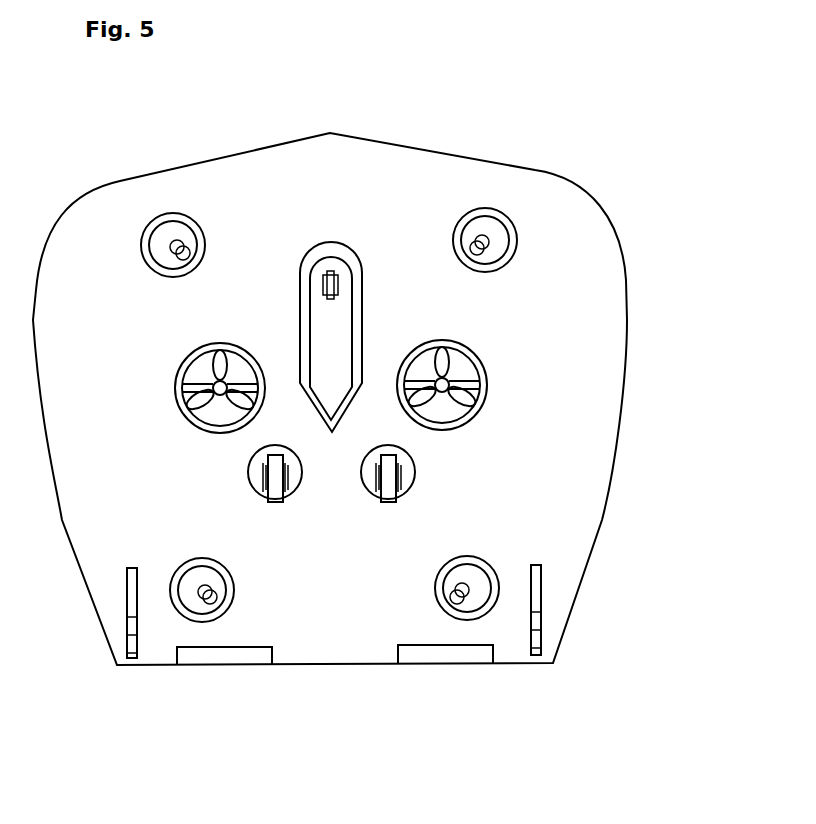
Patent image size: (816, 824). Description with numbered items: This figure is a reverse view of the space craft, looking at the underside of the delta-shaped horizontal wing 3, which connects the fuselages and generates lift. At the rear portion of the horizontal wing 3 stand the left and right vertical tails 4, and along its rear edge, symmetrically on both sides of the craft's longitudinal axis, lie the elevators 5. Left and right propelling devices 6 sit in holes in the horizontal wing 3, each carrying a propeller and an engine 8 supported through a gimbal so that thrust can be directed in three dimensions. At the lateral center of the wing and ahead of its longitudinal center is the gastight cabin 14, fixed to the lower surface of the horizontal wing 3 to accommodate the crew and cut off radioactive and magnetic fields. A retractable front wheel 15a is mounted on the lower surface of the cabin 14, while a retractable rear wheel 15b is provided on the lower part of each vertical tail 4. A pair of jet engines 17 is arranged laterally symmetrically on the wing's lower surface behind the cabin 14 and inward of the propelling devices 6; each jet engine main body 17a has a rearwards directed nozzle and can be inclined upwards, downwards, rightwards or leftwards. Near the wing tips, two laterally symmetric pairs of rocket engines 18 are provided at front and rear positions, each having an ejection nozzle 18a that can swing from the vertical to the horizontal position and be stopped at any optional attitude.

The horizontal wing 3 is at (176, 186).
The vertical tail 4 is at (127, 590).
The elevator 5 is at (224, 657).
The propelling device 6 is at (180, 405).
The engine 8 is at (201, 558).
The gastight cabin 14 is at (338, 246).
The retractable front wheel 15a is at (340, 285).
The retractable rear wheel 15b is at (132, 627).
The jet engine 17 is at (297, 487).
The jet engine main body 17a is at (277, 503).
The rocket engine 18 is at (143, 247).
The ejection nozzle 18a is at (486, 246).